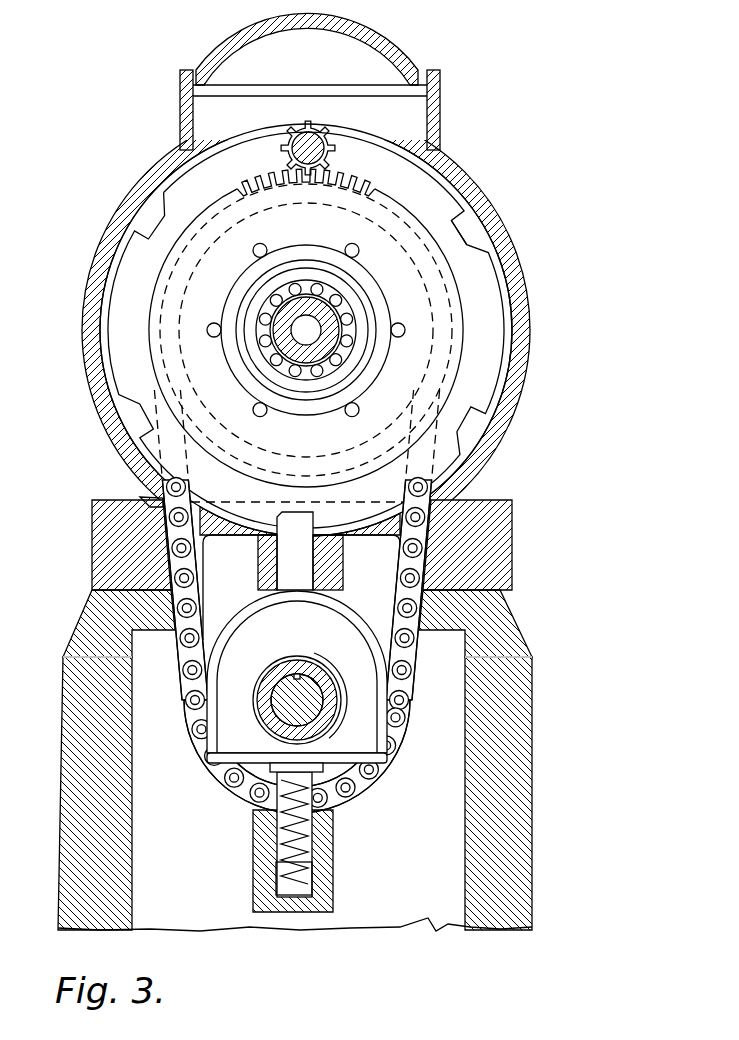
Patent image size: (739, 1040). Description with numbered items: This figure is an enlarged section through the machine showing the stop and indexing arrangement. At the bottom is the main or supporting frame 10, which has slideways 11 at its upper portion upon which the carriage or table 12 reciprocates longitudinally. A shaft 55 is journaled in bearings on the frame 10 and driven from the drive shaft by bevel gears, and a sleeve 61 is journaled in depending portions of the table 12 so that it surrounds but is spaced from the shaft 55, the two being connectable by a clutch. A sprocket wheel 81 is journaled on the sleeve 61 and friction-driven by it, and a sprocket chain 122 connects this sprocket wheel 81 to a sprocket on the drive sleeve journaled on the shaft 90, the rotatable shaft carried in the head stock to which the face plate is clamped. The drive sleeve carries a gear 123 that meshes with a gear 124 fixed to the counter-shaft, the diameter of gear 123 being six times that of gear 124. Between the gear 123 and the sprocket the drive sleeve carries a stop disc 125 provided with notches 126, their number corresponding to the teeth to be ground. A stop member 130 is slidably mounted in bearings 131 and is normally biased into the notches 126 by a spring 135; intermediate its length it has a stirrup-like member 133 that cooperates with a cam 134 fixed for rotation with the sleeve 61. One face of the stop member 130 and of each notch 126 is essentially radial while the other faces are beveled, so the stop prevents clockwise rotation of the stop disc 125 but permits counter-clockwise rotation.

The main or supporting frame 10 is at (76, 744).
The slideways 11 is at (100, 602).
The carriage or table 12 is at (92, 522).
The shaft 55 is at (272, 673).
The sleeve 61 is at (324, 684).
The sprocket wheel 81 is at (257, 613).
The shaft 90 is at (332, 334).
The sprocket chain 122 is at (160, 502).
The gear 123 is at (269, 183).
The gear 124 is at (334, 150).
The stop disc 125 is at (447, 182).
The notches 126 is at (470, 228).
The stop member 130 is at (320, 559).
The bearings 131 is at (262, 561).
The stirrup-like member 133 is at (342, 608).
The cam 134 is at (343, 721).
The spring 135 is at (296, 883).